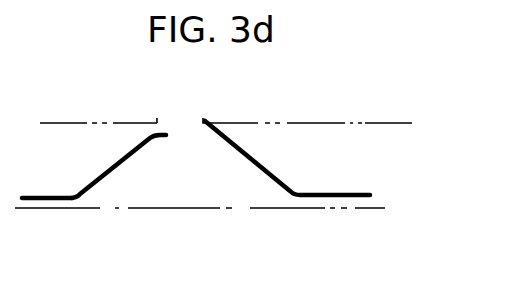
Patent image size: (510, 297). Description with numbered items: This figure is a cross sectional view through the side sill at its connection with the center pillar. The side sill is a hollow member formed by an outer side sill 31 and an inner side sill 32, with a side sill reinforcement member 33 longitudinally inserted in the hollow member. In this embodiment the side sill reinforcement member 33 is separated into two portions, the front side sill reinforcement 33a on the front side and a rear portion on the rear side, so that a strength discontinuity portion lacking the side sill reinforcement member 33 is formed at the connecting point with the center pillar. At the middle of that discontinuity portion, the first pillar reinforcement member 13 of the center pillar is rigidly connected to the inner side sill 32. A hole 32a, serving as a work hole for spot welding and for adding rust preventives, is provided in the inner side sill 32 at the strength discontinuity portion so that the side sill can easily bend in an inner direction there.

The first pillar reinforcement member 13 is at (309, 199).
The outer side sill 31 is at (192, 209).
The inner side sill 32 is at (58, 125).
The hole 32a is at (187, 125).
The side sill reinforcement member 33 is at (100, 184).
The front side sill reinforcement 33a is at (55, 200).